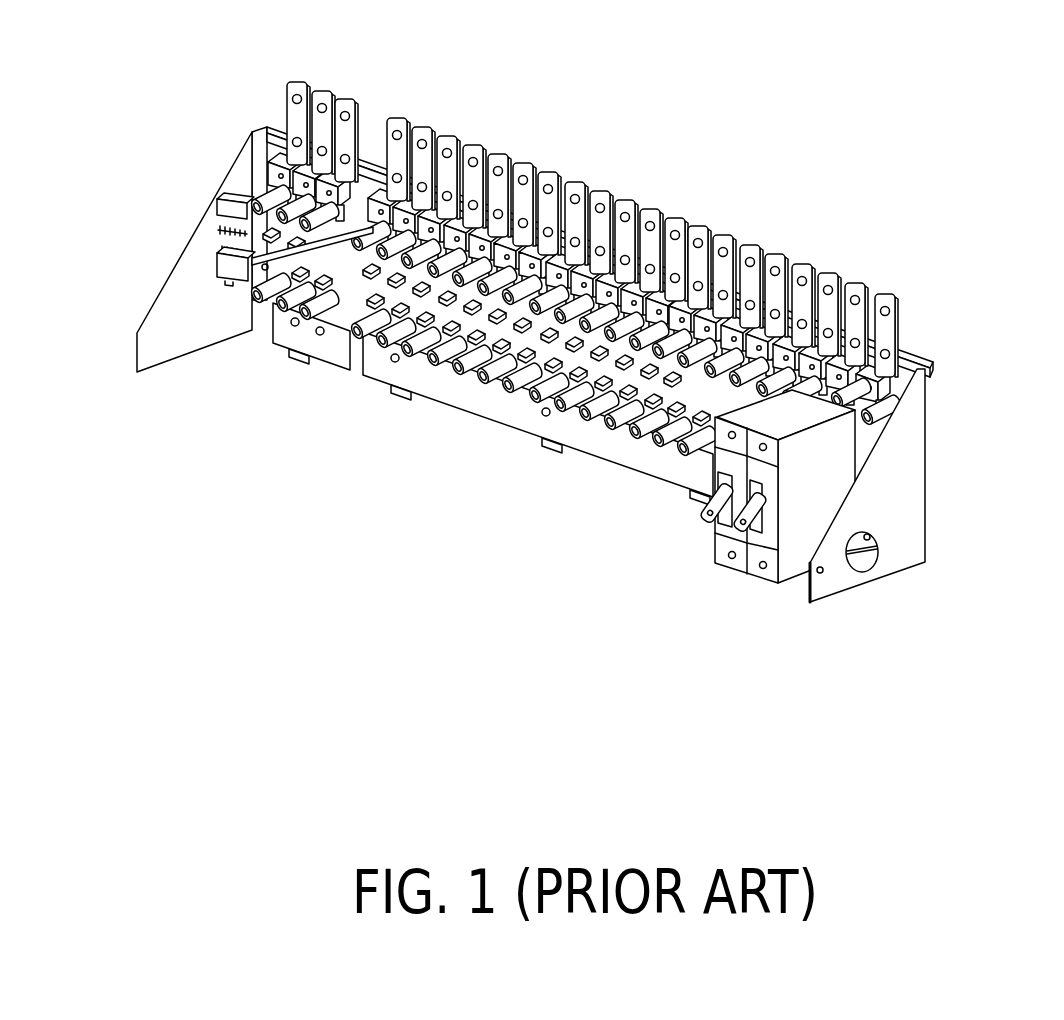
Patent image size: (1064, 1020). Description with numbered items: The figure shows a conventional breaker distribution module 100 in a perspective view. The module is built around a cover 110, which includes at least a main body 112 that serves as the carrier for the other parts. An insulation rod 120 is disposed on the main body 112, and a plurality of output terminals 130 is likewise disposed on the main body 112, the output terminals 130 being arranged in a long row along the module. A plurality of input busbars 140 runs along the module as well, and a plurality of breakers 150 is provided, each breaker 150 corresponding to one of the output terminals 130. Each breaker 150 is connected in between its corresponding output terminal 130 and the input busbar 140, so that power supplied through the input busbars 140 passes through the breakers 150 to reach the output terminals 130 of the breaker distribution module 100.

The breaker distribution module 100 is at (582, 357).
The cover 110 is at (912, 484).
The main body 112 is at (265, 148).
The insulation rod 120 is at (912, 362).
The output terminals 130 is at (343, 133).
The input busbars 140 is at (640, 452).
The breakers 150 is at (763, 568).